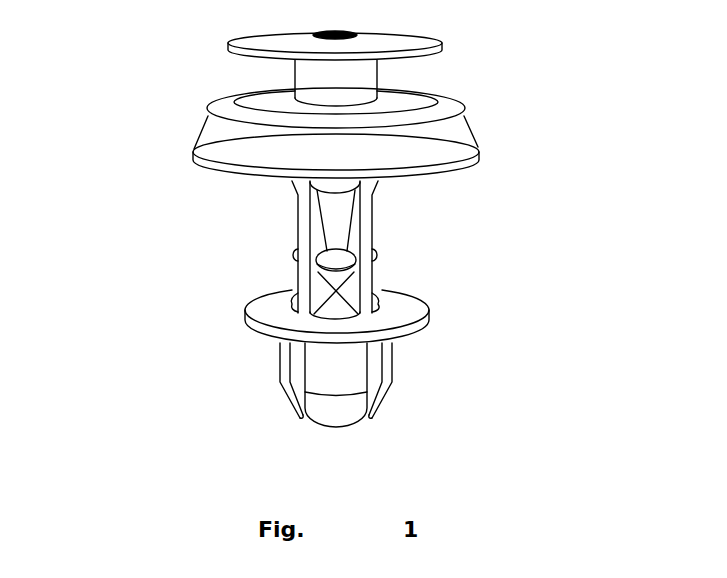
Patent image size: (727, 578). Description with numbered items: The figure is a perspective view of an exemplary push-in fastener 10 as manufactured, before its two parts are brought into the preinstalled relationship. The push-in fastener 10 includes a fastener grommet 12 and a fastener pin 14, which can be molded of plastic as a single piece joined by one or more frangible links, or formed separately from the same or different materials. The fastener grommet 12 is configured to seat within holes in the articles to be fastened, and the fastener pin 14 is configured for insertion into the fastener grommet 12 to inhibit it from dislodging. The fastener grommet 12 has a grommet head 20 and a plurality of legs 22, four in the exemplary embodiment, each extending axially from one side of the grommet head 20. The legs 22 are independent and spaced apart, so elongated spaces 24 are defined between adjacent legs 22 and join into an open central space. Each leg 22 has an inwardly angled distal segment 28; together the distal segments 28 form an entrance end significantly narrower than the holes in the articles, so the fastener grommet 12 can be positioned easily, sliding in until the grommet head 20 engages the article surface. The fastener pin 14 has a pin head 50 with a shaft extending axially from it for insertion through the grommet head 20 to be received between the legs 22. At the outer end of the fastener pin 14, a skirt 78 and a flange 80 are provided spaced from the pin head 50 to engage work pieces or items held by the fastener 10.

The push-in fastener 10 is at (158, 100).
The fastener grommet 12 is at (452, 329).
The fastener pin 14 is at (520, 155).
The grommet head 20 is at (255, 310).
The legs 22 is at (280, 364).
The elongated spaces 24 is at (298, 411).
The inwardly angled distal segment 28 is at (293, 401).
The pin head 50 is at (418, 42).
The skirt 78 is at (465, 146).
The flange 80 is at (450, 102).